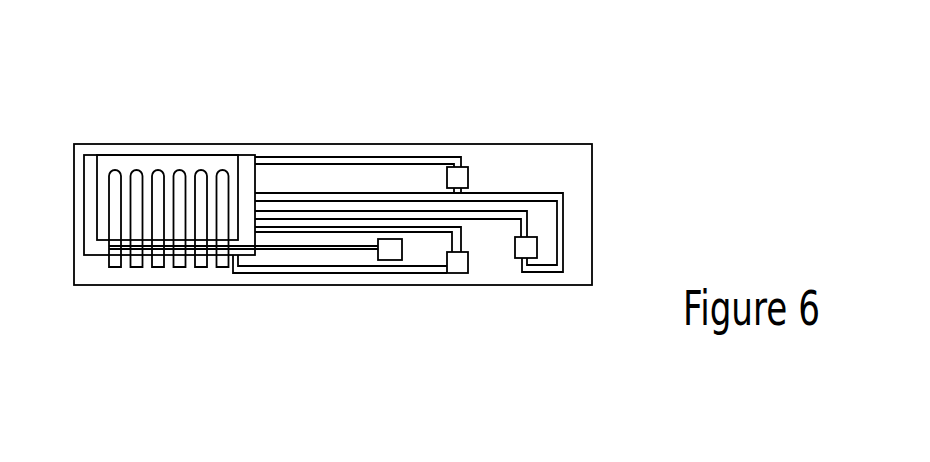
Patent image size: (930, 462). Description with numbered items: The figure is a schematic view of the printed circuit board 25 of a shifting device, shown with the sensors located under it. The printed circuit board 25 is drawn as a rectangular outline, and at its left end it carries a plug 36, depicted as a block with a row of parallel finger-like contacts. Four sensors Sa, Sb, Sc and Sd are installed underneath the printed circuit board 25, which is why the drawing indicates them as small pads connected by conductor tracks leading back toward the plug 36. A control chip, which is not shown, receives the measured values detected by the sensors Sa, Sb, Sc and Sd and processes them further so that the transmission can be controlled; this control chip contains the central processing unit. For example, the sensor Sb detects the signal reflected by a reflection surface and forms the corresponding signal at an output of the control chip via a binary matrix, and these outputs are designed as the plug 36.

The printed circuit board 25 is at (573, 168).
The plug 36 is at (190, 170).
The sensor Sa is at (390, 252).
The sensor Sb is at (457, 265).
The sensor Sc is at (525, 247).
The sensor Sd is at (467, 177).